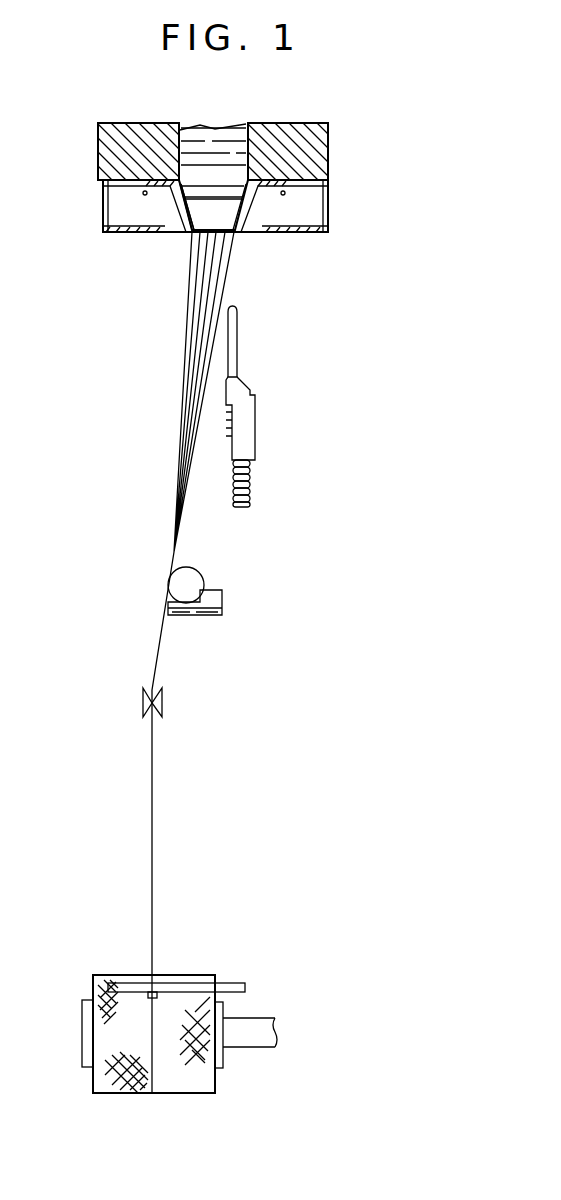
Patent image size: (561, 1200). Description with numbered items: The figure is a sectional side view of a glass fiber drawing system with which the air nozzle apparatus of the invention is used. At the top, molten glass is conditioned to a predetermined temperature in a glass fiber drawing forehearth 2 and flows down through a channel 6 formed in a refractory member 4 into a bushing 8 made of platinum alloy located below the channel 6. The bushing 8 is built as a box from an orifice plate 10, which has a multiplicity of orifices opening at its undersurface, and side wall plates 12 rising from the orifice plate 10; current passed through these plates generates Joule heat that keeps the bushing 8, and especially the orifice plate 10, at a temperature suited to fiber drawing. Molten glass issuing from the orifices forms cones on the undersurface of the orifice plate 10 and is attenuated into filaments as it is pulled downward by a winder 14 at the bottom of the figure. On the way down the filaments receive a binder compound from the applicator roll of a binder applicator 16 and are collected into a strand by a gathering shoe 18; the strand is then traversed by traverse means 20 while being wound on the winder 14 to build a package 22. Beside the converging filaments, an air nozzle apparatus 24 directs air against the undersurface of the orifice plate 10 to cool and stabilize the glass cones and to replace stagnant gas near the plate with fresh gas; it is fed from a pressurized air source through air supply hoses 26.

The glass fiber drawing forehearth 2 is at (230, 153).
The refractory member 4 is at (322, 148).
The channel 6 is at (246, 142).
The bushing 8 is at (180, 218).
The orifice plate 10 is at (237, 232).
The side wall plates 12 is at (250, 188).
The winder 14 is at (152, 1042).
The binder applicator 16 is at (222, 597).
The gathering shoe 18 is at (163, 703).
The traverse means 20 is at (188, 985).
The package 22 is at (200, 1082).
The air nozzle apparatus 24 is at (249, 385).
The air supply hoses 26 is at (252, 472).